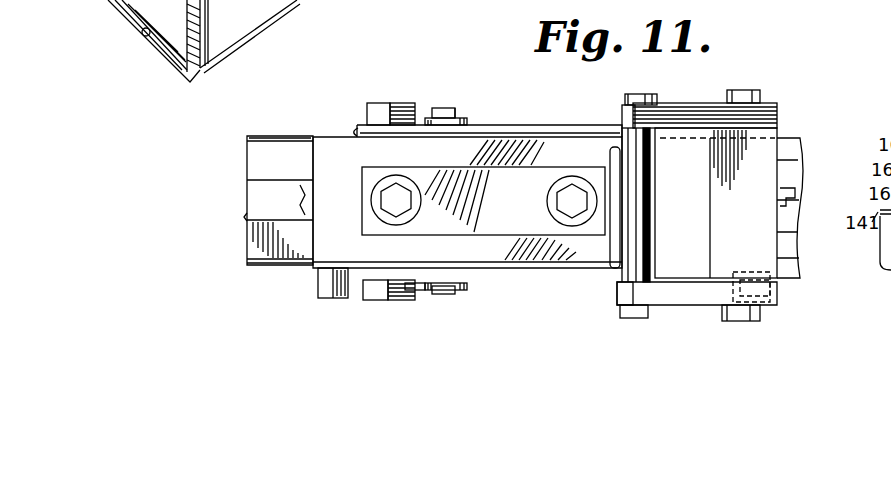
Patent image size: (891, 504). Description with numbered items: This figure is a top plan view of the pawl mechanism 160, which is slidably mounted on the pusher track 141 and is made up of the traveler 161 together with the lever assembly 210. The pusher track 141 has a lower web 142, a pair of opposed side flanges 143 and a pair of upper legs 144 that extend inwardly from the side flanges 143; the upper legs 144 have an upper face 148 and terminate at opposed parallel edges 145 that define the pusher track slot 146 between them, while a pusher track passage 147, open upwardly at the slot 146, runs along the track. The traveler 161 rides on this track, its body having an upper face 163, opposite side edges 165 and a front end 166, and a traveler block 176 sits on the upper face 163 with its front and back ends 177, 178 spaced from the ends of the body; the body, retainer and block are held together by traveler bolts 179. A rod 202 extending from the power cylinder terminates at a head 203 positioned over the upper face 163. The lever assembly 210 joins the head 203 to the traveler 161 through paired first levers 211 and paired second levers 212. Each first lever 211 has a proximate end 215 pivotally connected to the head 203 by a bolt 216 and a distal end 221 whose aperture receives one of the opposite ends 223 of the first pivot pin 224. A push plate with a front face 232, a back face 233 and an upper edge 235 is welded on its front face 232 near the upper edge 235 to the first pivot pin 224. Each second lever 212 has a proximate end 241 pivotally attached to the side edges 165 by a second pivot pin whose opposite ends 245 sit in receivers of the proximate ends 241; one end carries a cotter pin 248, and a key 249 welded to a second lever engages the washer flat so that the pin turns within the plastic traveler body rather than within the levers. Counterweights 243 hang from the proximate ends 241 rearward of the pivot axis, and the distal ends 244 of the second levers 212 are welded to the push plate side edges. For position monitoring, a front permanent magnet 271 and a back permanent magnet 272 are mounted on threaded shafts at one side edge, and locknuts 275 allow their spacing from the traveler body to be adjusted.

The pusher track 141 is at (244, 256).
The lower web 142 is at (172, 68).
The side flanges 143 is at (248, 30).
The upper legs 144 is at (247, 155).
The parallel edges 145 is at (280, 202).
The pusher track slot 146 is at (244, 215).
The pusher track passage 147 is at (143, 35).
The upper face 148 is at (270, 135).
The pawl mechanism 160 is at (320, 128).
The traveler 161 is at (311, 267).
The upper face 163 is at (360, 156).
The side edges 165 is at (338, 128).
The front end 166 is at (311, 160).
The traveler block 176 is at (362, 234).
The front end 177 is at (362, 200).
The back end 178 is at (606, 172).
The traveler bolts 179 is at (408, 208).
The rod 202 is at (782, 212).
The head 203 is at (710, 251).
The lever assembly 210 is at (786, 104).
The first levers 211 is at (700, 136).
The second levers 212 is at (496, 125).
The proximate end 215 is at (778, 120).
The bolt 216 is at (752, 90).
The distal end 221 is at (622, 108).
The opposite ends 223 is at (648, 92).
The first pivot pin 224 is at (660, 103).
The front face 232 is at (628, 220).
The back face 233 is at (610, 247).
The upper edge 235 is at (618, 196).
The proximate end 241 is at (380, 141).
The counterweights 243 is at (394, 302).
The distal ends 244 is at (610, 126).
The opposite ends 245 is at (452, 108).
The cotter pin 248 is at (420, 112).
The key 249 is at (415, 292).
The front permanent magnet 271 is at (775, 300).
The back permanent magnet 272 is at (328, 300).
The locknuts 275 is at (316, 282).